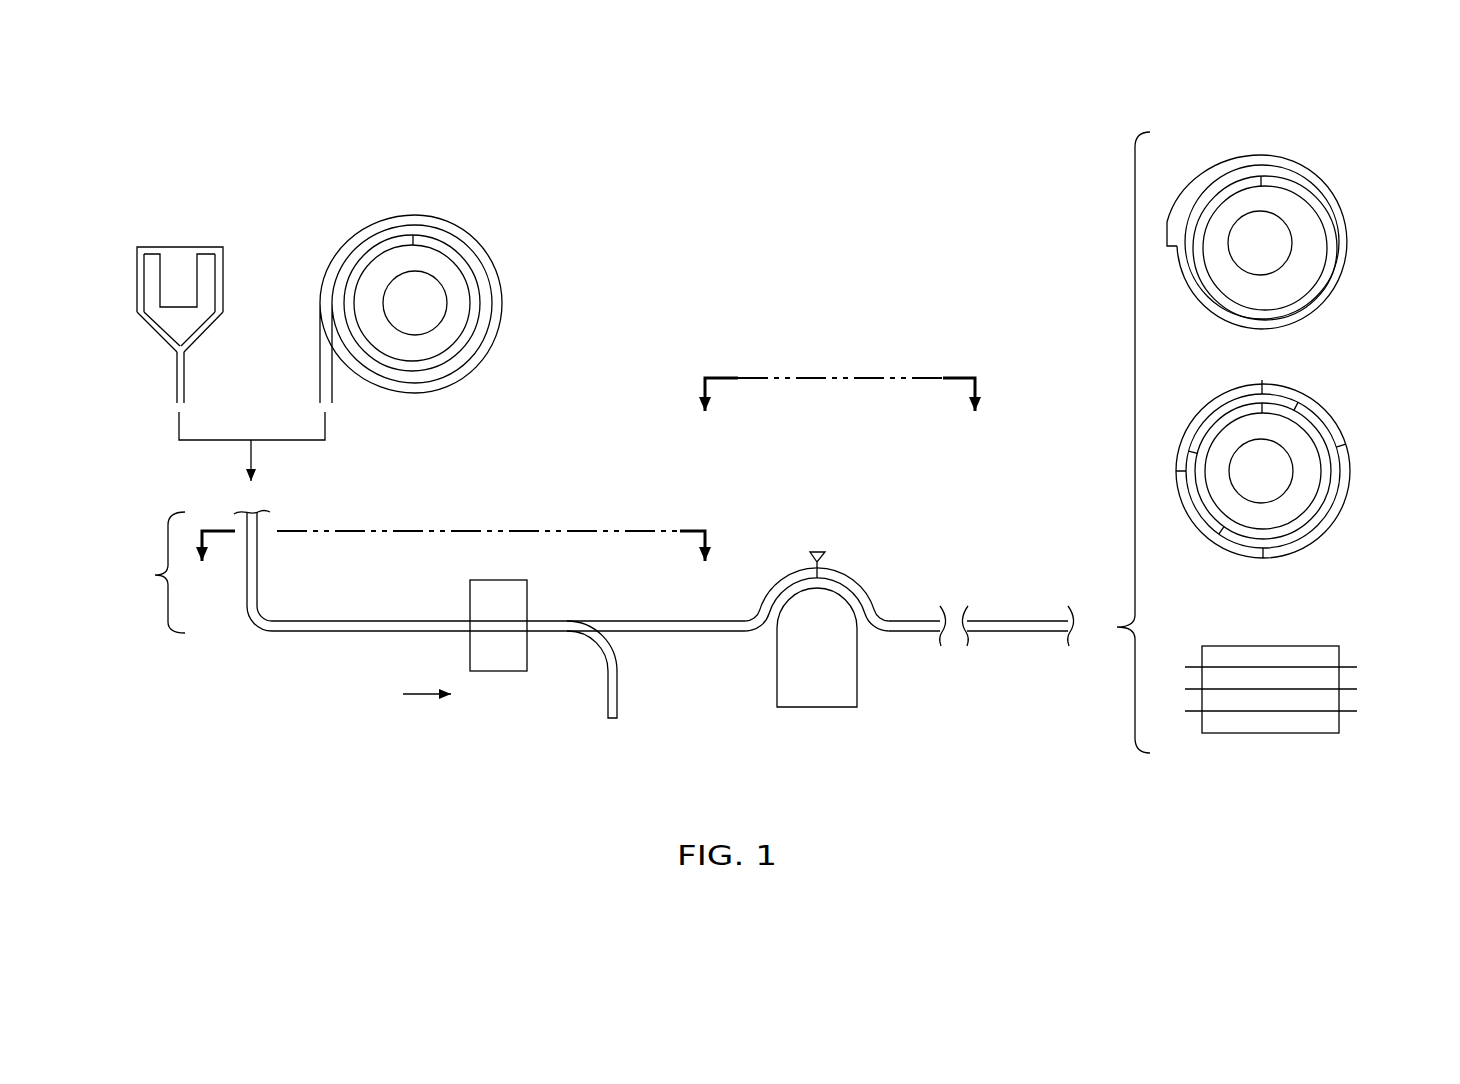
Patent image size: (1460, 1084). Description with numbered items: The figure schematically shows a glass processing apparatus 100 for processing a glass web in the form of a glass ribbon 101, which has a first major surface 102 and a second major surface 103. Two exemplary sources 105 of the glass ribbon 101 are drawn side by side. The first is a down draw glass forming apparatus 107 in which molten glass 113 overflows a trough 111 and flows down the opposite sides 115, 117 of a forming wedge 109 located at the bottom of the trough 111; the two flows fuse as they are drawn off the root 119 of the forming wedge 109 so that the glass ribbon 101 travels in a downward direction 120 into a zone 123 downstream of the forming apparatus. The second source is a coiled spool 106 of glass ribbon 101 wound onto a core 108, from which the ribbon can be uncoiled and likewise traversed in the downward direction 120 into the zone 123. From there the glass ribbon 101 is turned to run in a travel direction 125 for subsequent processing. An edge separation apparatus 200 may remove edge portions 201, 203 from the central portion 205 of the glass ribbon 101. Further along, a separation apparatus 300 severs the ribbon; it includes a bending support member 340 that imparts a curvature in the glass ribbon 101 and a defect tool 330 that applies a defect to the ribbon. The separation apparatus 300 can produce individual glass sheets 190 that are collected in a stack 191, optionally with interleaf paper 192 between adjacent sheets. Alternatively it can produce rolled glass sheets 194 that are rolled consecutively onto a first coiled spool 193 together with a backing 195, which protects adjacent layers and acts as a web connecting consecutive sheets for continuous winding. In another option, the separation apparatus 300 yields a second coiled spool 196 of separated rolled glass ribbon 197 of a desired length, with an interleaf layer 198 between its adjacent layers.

The glass processing apparatus 100 is at (772, 414).
The glass ribbon 101 is at (253, 577).
The first major surface 102 is at (399, 576).
The second major surface 103 is at (394, 684).
The source of glass ribbon 105 is at (115, 125).
The coiled spool 106 is at (436, 287).
The down draw glass forming apparatus 107 is at (182, 269).
The core 108 is at (430, 352).
The forming wedge 109 is at (192, 318).
The trough 111 is at (175, 280).
The molten glass 113 is at (152, 247).
The side of forming wedge 115 is at (143, 318).
The side of forming wedge 117 is at (203, 330).
The root 119 is at (172, 348).
The downward direction 120 is at (251, 462).
The zone 123 is at (155, 573).
The travel direction 125 is at (425, 694).
The glass sheet 190 is at (1016, 621).
The stack 191 is at (1322, 668).
The interleaf paper 192 is at (1350, 711).
The first coiled spool 193 is at (1297, 437).
The rolled glass sheets 194 is at (1320, 513).
The backing 195 is at (1340, 472).
The second coiled spool 196 is at (1293, 190).
The separated rolled glass ribbon 197 is at (1343, 240).
The interleaf layer 198 is at (1337, 267).
The edge separation apparatus 200 is at (500, 671).
The edge portion 201 is at (613, 718).
The edge portion 203 is at (592, 669).
The central portion 205 is at (685, 631).
The separation apparatus 300 is at (834, 585).
The defect tool 330 is at (808, 555).
The bending support member 340 is at (857, 678).